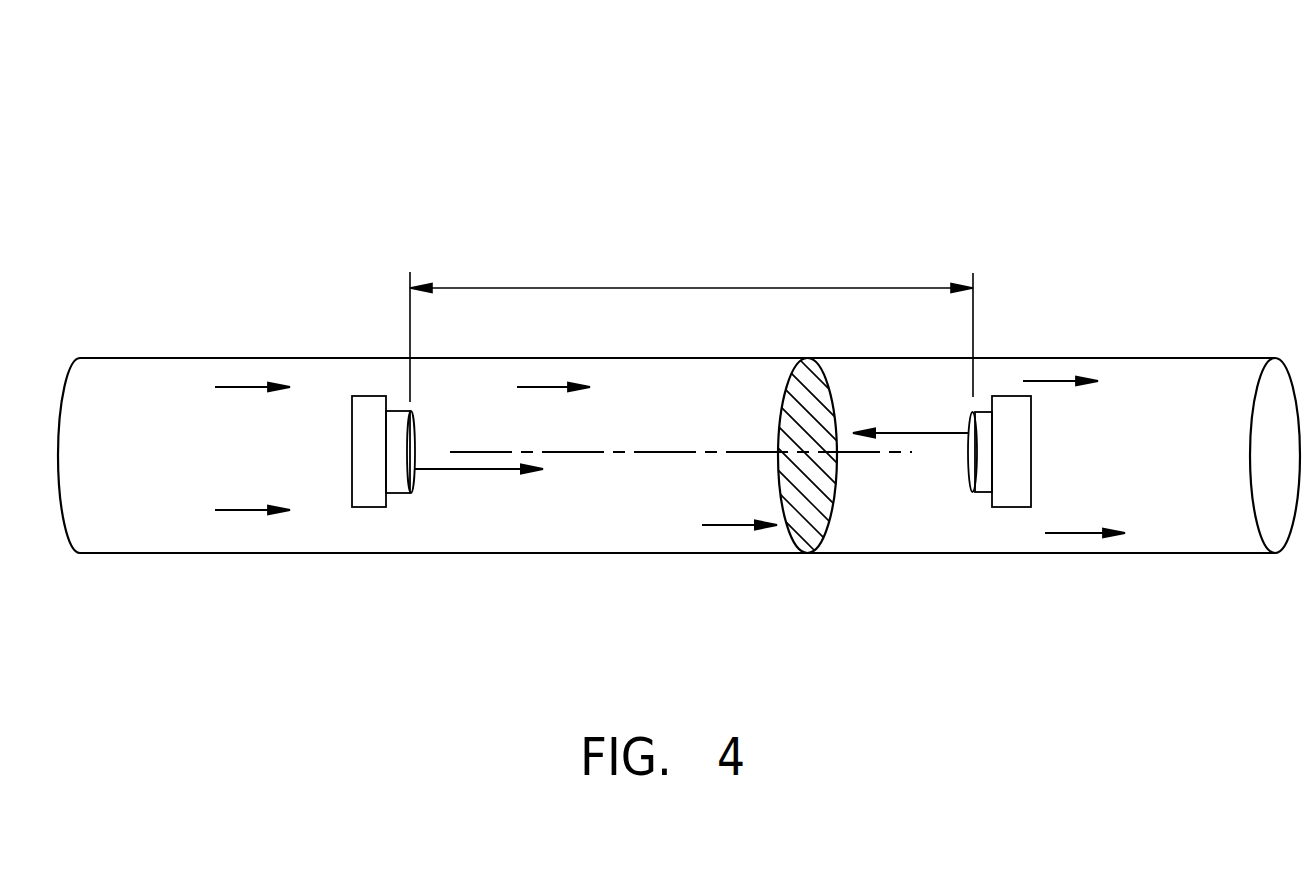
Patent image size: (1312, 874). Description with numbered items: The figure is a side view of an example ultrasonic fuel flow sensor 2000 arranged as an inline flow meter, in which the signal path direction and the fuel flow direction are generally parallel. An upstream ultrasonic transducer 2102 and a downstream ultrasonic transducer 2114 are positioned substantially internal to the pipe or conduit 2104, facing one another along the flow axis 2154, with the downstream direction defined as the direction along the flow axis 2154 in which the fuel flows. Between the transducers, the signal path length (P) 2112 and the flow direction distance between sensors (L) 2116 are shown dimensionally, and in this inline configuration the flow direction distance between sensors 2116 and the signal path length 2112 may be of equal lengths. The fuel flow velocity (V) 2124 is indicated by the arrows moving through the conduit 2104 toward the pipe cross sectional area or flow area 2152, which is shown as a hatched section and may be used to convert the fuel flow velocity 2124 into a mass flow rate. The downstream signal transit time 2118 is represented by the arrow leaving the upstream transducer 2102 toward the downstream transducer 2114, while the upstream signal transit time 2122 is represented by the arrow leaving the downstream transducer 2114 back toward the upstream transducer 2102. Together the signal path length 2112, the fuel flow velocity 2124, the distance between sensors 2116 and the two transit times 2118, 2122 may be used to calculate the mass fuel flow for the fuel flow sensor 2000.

The fuel flow sensor 2000 is at (313, 93).
The pipe or conduit 2104 is at (165, 383).
The upstream ultrasonic transducer 2102 is at (413, 442).
The downstream signal transit time 2118 is at (468, 471).
The flow axis 2154 is at (715, 450).
The pipe cross sectional area or flow area 2152 is at (808, 554).
The fuel flow velocity 2124 is at (706, 526).
The downstream ultrasonic transducer 2114 is at (973, 452).
The upstream signal transit time 2122 is at (918, 433).
The signal path length 2112 is at (691, 315).
The flow direction distance between sensors 2116 is at (660, 288).